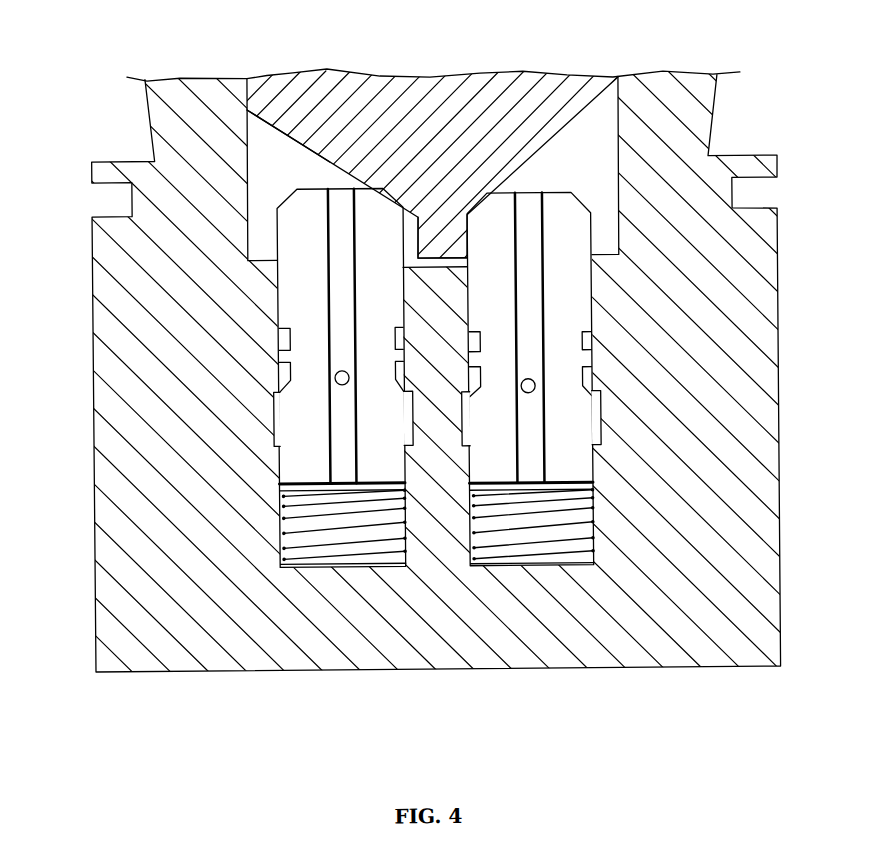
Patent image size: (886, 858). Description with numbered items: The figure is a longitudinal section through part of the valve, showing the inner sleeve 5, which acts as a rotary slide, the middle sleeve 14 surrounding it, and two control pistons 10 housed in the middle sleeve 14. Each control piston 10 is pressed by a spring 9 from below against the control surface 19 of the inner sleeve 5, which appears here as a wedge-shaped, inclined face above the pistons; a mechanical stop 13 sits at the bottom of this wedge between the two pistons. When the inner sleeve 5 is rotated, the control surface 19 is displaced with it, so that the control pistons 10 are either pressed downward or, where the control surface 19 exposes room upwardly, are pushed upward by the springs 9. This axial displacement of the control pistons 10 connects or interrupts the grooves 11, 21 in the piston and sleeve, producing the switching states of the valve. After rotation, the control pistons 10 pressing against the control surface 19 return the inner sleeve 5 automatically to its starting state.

The inner sleeve 5 is at (458, 98).
The spring 9 is at (335, 547).
The control piston 10 is at (292, 297).
The groove 11 is at (599, 431).
The mechanical stop 13 is at (430, 251).
The middle sleeve 14 is at (749, 560).
The control surface 19 is at (332, 109).
The groove 21 is at (587, 348).